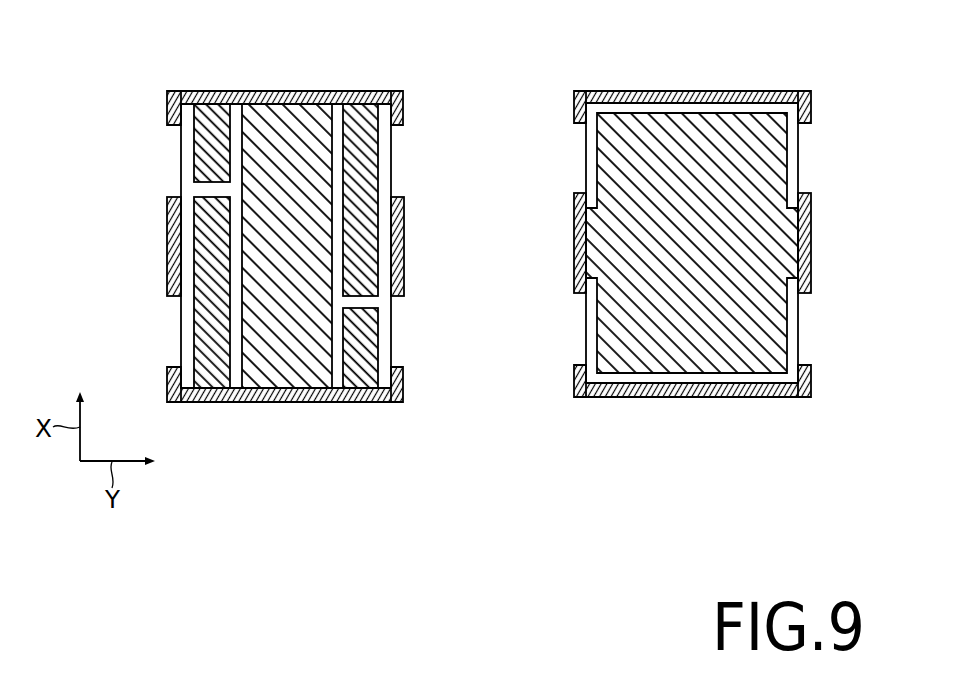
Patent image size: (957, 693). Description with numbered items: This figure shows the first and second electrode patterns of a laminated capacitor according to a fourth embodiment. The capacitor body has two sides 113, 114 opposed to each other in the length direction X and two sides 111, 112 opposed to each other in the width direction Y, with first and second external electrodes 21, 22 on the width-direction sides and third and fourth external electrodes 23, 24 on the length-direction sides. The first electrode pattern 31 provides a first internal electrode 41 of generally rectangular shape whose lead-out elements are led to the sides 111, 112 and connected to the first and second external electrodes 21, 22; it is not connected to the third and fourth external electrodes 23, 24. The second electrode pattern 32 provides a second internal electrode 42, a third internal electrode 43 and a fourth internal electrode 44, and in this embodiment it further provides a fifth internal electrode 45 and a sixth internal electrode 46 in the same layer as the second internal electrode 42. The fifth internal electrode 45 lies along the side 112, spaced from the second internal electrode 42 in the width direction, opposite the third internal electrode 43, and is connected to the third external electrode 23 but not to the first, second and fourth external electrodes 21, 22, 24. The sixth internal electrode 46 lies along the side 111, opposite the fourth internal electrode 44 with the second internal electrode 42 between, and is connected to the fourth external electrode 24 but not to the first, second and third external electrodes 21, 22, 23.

The second electrode pattern 32 is at (74, 112).
The first electrode pattern 31 is at (531, 127).
The side of the capacitor body 111 is at (180, 180).
The side of the capacitor body 112 is at (392, 177).
The side of the capacitor body 113 is at (218, 396).
The side of the capacitor body 114 is at (328, 92).
The first external electrode 21 is at (168, 248).
The second external electrode 22 is at (404, 237).
The third external electrode 23 is at (286, 396).
The fourth external electrode 24 is at (242, 92).
The first internal electrode 41 is at (774, 317).
The second internal electrode 42 is at (307, 370).
The third internal electrode 43 is at (210, 333).
The fourth internal electrode 44 is at (372, 148).
The fifth internal electrode 45 is at (369, 338).
The sixth internal electrode 46 is at (210, 147).